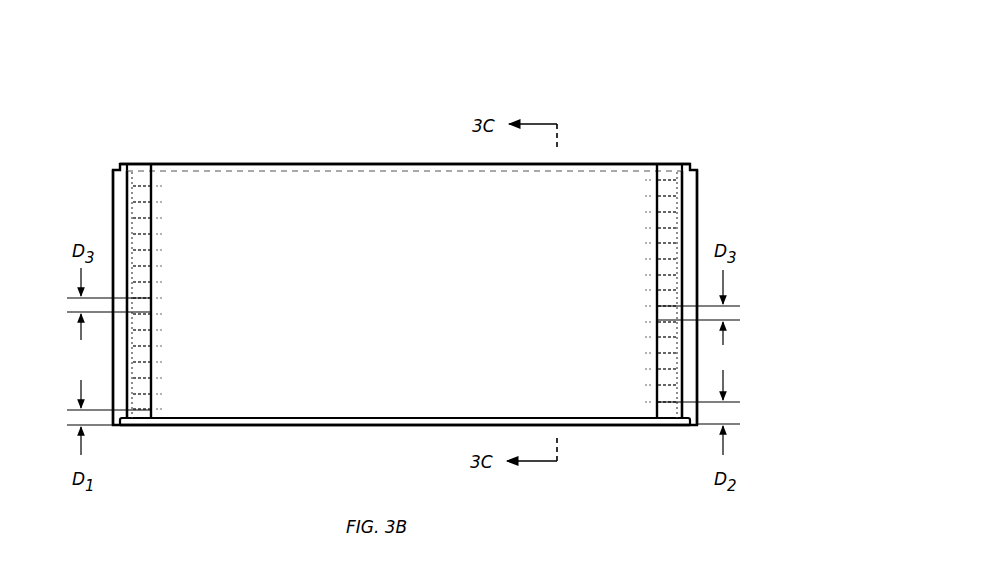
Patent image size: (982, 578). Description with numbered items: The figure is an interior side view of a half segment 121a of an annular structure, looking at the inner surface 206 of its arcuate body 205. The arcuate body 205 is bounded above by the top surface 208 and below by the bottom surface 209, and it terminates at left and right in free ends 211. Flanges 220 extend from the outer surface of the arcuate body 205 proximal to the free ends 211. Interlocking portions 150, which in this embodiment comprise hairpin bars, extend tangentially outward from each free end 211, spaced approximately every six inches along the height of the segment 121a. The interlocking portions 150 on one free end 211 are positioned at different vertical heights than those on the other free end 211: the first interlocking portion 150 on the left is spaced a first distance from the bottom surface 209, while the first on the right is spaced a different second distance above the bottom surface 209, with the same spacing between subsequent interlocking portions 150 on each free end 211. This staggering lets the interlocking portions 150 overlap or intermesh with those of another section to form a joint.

The half segment 121a is at (733, 126).
The inner surface 206 is at (314, 200).
The top surface 208 is at (446, 163).
The bottom surface 209 is at (391, 427).
The flange 220 is at (118, 205).
The arcuate body 205 is at (400, 305).
The free end 211 is at (139, 165).
The interlocking portion 150 is at (137, 267).